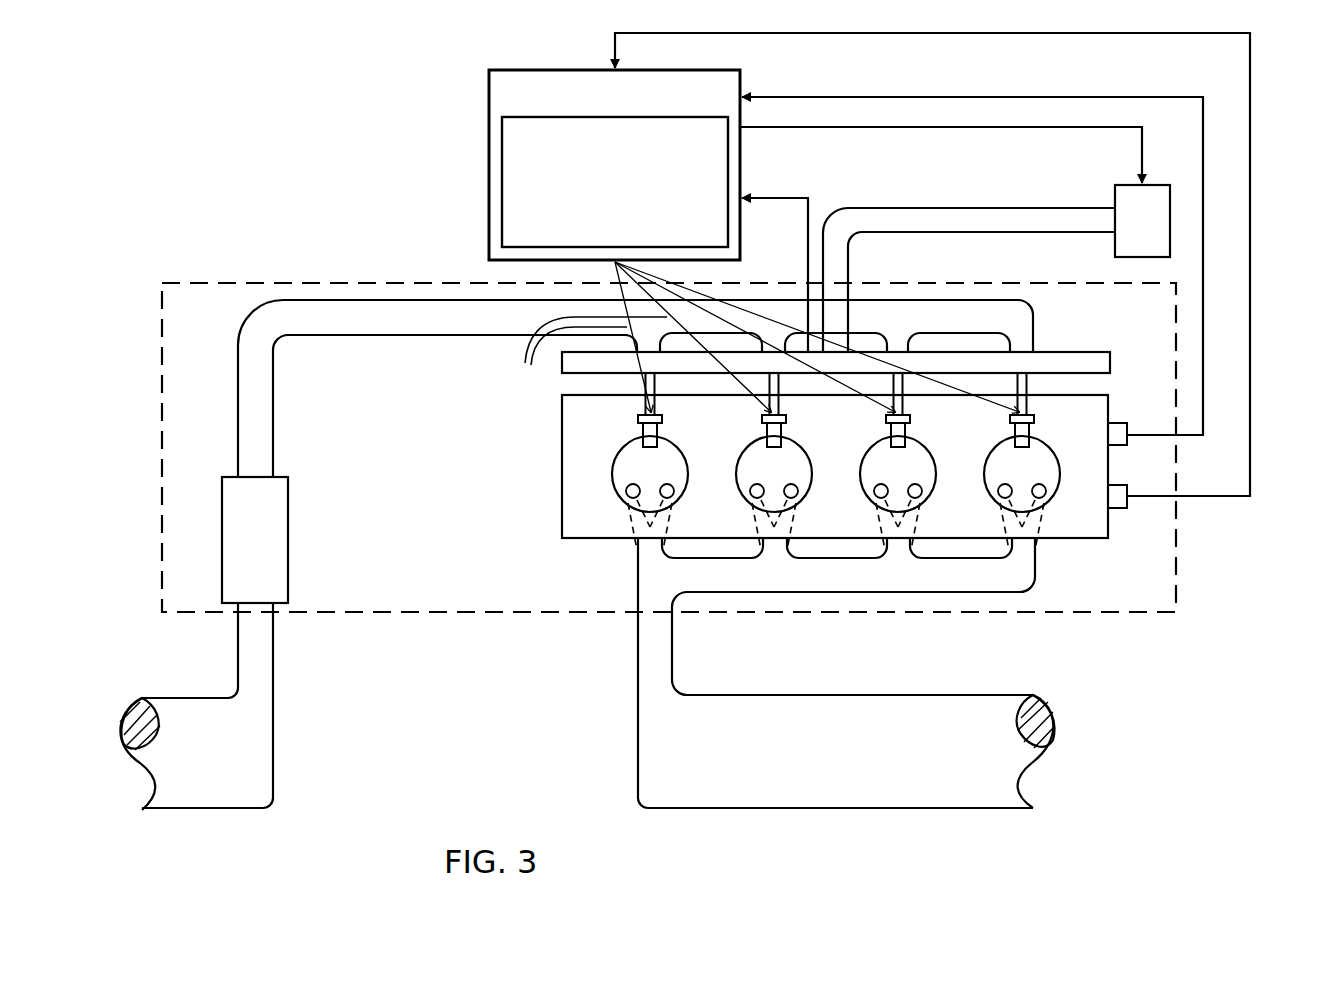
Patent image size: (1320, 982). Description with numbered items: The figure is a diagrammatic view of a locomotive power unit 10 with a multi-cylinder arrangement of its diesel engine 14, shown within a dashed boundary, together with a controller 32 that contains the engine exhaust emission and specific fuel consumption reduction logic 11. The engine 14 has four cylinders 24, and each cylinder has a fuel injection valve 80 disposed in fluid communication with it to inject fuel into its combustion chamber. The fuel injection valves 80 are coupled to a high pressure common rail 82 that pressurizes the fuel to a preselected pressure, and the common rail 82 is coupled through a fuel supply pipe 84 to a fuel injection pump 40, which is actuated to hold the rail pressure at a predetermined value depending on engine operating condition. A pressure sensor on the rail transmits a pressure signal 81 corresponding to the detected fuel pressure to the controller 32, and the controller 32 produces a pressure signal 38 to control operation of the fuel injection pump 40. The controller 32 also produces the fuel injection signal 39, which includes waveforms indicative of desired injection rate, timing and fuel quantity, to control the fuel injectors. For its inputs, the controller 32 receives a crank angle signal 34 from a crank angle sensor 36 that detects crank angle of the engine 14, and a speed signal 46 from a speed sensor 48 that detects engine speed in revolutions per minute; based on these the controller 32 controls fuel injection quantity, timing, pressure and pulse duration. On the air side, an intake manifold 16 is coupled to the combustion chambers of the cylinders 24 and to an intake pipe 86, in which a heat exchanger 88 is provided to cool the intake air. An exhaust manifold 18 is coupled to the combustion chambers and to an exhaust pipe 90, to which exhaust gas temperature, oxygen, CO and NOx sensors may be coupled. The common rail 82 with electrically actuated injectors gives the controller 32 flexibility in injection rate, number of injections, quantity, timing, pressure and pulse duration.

The locomotive power unit 10 is at (138, 90).
The engine exhaust emission and specific fuel consumption reduction logic 11 is at (502, 200).
The diesel engine 14 is at (1056, 614).
The intake manifold 16 is at (766, 305).
The exhaust manifold 18 is at (667, 638).
The cylinders 24 is at (688, 482).
The controller 32 is at (489, 118).
The crank angle signal 34 is at (955, 97).
The crank angle sensor 36 is at (1115, 420).
The pressure signal 38 is at (843, 128).
The fuel injection signal 39 is at (590, 353).
The fuel injection pump 40 is at (1156, 228).
The speed signal 46 is at (1250, 205).
The speed sensor 48 is at (1115, 483).
The fuel injection valve 80 is at (662, 420).
The pressure signal 81 is at (786, 197).
The high pressure common rail 82 is at (1110, 362).
The fuel supply pipe 84 is at (958, 212).
The intake pipe 86 is at (264, 417).
The heat exchanger 88 is at (288, 537).
The exhaust pipe 90 is at (867, 702).